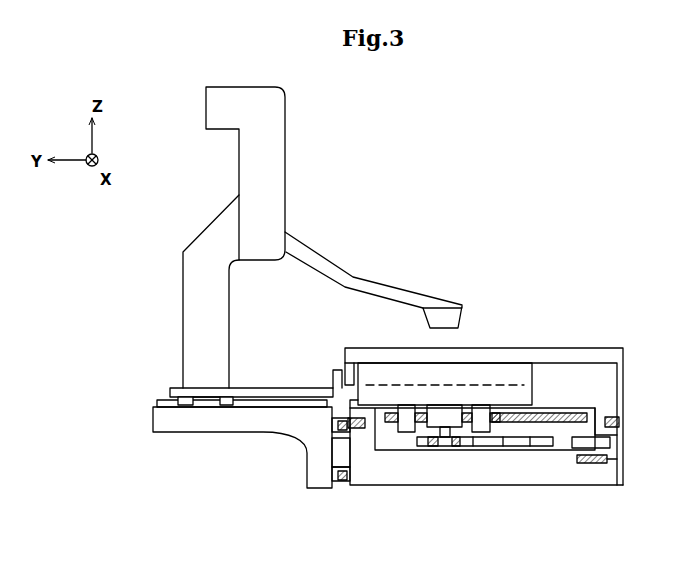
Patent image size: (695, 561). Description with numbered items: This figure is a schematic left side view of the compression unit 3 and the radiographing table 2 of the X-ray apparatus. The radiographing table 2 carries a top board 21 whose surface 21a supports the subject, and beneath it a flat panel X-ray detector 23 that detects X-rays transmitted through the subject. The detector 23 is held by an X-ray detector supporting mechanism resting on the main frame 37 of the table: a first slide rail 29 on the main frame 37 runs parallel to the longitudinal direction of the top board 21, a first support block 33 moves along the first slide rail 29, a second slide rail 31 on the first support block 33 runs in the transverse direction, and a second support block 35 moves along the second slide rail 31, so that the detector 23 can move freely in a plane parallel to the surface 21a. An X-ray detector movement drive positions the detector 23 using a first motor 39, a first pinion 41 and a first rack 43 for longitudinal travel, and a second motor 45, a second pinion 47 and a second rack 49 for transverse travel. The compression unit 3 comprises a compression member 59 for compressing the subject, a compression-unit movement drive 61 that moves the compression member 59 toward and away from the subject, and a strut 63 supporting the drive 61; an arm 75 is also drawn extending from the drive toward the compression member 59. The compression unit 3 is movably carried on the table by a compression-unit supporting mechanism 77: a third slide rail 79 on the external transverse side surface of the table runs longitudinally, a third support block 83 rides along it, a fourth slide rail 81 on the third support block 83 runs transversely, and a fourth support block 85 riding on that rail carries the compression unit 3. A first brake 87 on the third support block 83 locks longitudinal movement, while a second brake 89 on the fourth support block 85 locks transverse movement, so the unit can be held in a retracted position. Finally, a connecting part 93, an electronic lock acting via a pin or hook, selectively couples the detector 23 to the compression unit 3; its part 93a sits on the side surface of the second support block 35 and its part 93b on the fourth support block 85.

The radiographing table 2 is at (532, 256).
The compression unit 3 is at (147, 273).
The top board 21 is at (615, 348).
The surface of the top board 21a is at (587, 347).
The flat panel X-ray detector 23 is at (514, 349).
The first slide rail 29 is at (618, 422).
The second slide rail 31 is at (400, 450).
The first support block 33 is at (552, 447).
The second support block 35 is at (540, 393).
The main frame 37 is at (423, 487).
The first motor 39 is at (611, 443).
The first pinion 41 is at (588, 470).
The first rack 43 is at (620, 462).
The second motor 45 is at (462, 446).
The second pinion 47 is at (440, 450).
The second rack 49 is at (545, 455).
The compression member 59 is at (464, 318).
The compression-unit movement drive 61 is at (285, 168).
The strut 63 is at (196, 235).
The arm 75 is at (388, 290).
The compression-unit supporting mechanism 77 is at (285, 483).
The third slide rail 79 is at (335, 428).
The fourth slide rail 81 is at (227, 406).
The third support block 83 is at (205, 432).
The fourth support block 85 is at (252, 407).
The first brake 87 is at (331, 456).
The second brake 89 is at (205, 396).
The connecting part 93 is at (288, 367).
The connecting part on FPD side 93a is at (344, 360).
The connecting part on compression unit side 93b is at (333, 374).